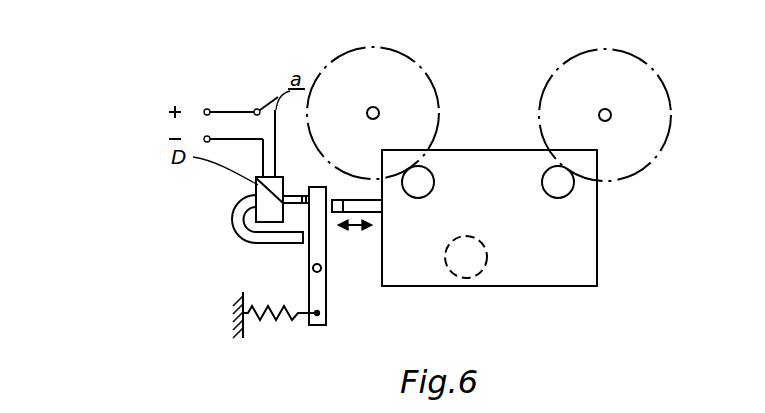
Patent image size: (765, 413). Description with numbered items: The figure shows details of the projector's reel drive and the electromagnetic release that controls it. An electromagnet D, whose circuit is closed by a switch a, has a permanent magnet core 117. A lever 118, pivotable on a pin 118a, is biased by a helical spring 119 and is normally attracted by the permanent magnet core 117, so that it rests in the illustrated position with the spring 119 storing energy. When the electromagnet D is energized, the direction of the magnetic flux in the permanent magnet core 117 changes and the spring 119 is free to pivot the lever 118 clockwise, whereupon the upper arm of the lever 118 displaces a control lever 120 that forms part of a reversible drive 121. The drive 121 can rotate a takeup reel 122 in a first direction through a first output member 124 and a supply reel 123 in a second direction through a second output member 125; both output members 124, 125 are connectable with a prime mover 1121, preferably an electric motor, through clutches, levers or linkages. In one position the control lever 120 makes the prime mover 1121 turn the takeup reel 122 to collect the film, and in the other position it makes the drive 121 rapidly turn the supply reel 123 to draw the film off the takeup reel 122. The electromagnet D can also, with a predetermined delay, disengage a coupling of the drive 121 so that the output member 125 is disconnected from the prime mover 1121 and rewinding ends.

The permanent magnet core 117 is at (265, 238).
The lever 118 is at (320, 242).
The pin 118a is at (313, 268).
The helical spring 119 is at (272, 318).
The control lever 120 is at (357, 198).
The reversible drive 121 is at (513, 262).
The prime mover 1121 is at (458, 280).
The takeup reel 122 is at (397, 75).
The supply reel 123 is at (632, 75).
The first output member 124 is at (412, 188).
The second output member 125 is at (553, 190).